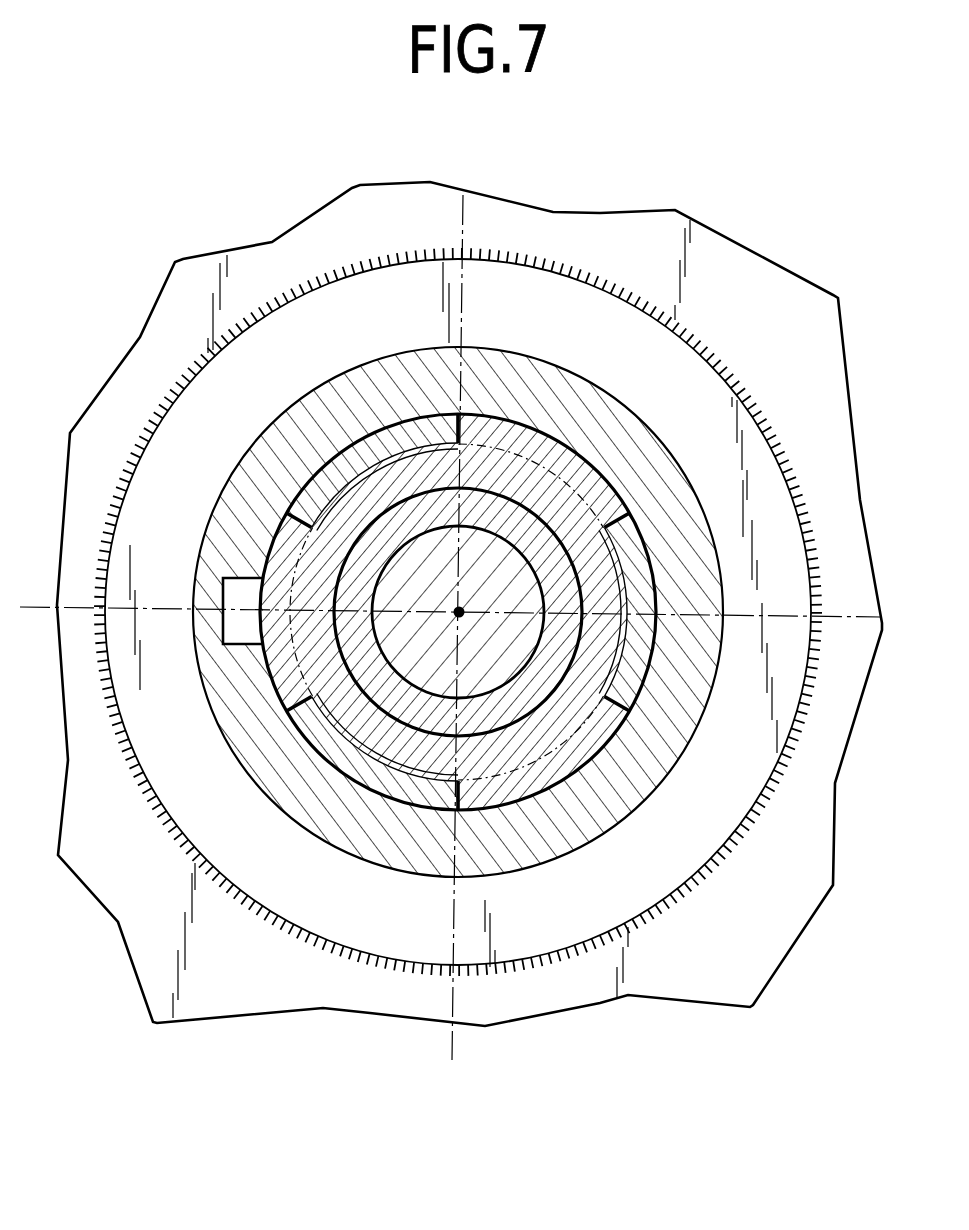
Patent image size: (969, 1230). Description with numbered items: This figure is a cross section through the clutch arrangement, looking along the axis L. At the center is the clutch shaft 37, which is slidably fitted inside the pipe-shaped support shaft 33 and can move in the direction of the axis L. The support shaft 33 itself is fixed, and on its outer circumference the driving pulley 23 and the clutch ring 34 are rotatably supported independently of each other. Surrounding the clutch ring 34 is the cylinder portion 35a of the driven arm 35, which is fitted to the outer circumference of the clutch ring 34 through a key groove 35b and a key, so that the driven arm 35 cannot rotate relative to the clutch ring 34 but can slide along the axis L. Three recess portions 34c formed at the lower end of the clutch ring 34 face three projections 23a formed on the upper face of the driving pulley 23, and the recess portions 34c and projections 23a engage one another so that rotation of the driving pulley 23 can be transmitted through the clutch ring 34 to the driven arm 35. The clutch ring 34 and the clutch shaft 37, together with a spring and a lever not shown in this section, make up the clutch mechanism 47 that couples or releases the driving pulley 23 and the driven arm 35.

The driving pulley 23 is at (780, 339).
The projections 23a is at (400, 430).
The support shaft 33 is at (537, 508).
The clutch ring 34 is at (513, 412).
The recess portions 34c is at (313, 522).
The driven arm 35 is at (325, 382).
The cylinder portion 35a is at (250, 718).
The key groove 35b is at (222, 596).
The clutch shaft 37 is at (442, 594).
The clutch mechanism 47 is at (723, 520).
The axis L is at (461, 615).